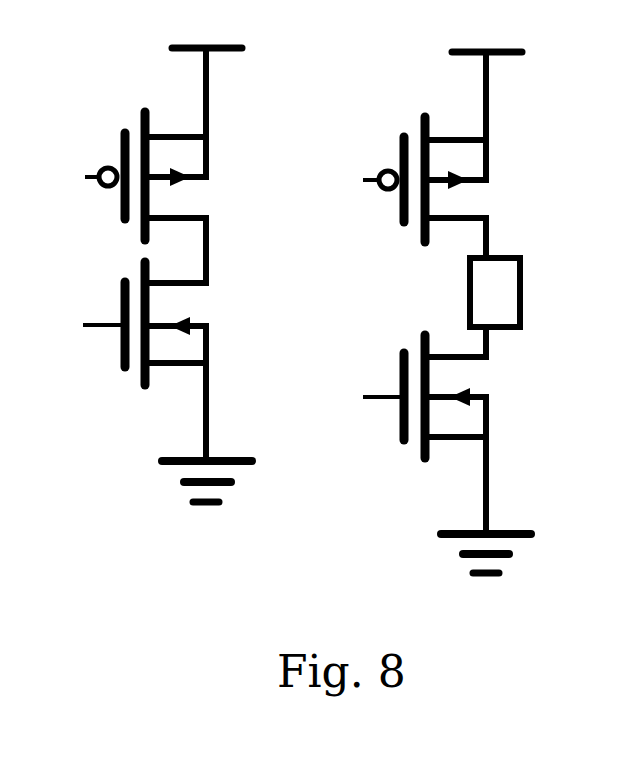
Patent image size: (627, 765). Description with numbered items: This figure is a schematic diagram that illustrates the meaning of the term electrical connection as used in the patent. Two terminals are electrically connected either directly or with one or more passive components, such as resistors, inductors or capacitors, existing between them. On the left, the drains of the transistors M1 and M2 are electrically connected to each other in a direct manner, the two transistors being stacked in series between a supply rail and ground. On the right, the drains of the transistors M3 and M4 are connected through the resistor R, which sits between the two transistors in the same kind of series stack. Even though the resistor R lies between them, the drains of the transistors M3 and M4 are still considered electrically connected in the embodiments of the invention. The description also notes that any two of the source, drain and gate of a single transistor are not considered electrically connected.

The transistor M1 is at (186, 171).
The transistor M2 is at (185, 333).
The transistor M3 is at (466, 174).
The transistor M4 is at (467, 405).
The resistor R is at (495, 292).